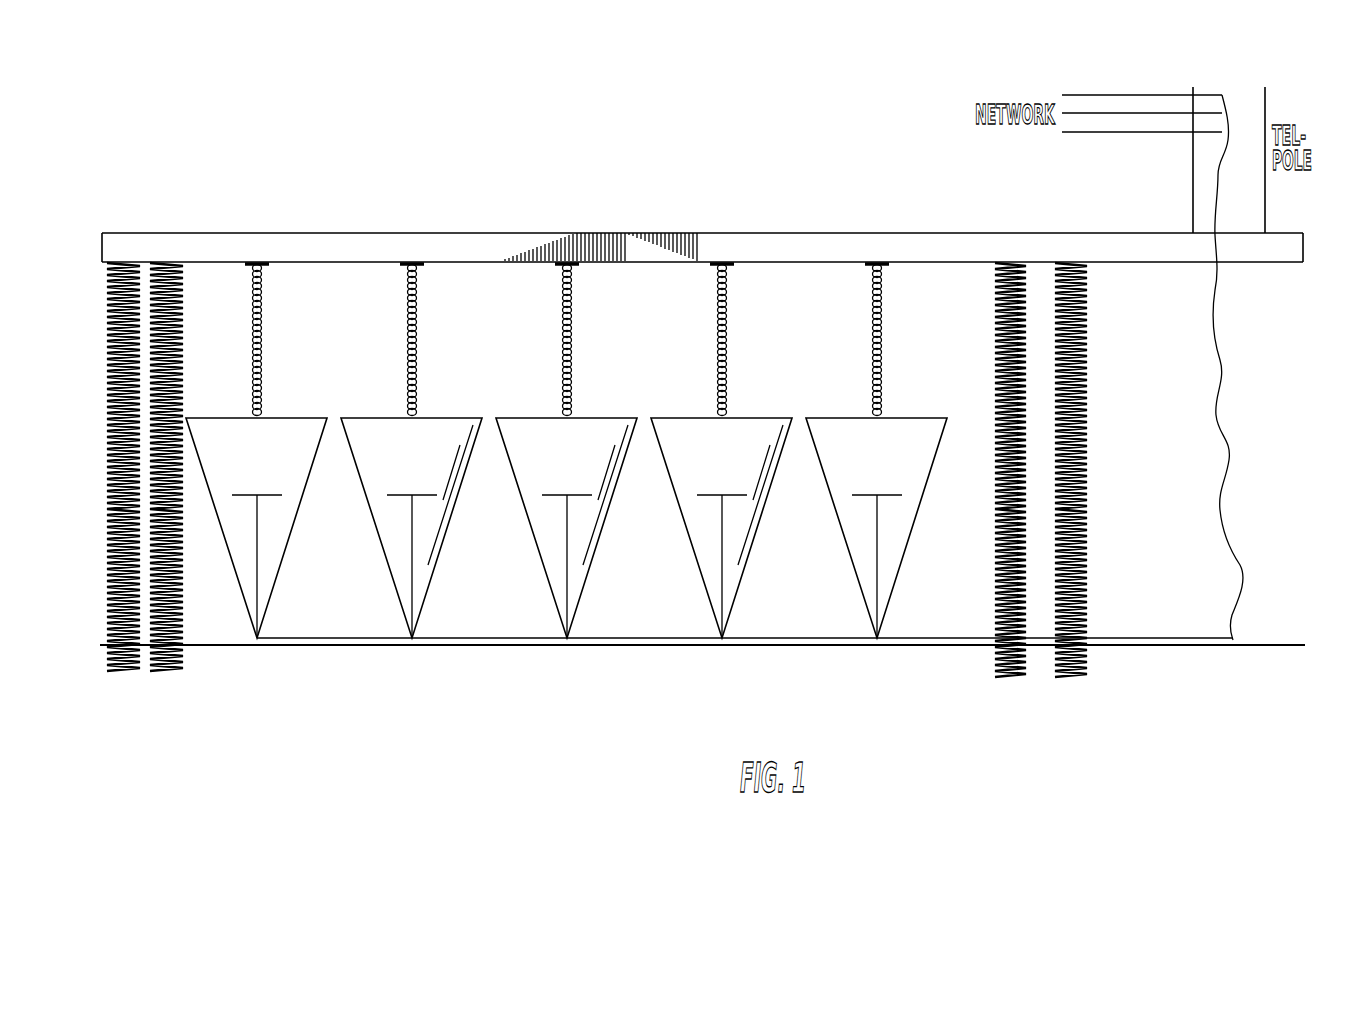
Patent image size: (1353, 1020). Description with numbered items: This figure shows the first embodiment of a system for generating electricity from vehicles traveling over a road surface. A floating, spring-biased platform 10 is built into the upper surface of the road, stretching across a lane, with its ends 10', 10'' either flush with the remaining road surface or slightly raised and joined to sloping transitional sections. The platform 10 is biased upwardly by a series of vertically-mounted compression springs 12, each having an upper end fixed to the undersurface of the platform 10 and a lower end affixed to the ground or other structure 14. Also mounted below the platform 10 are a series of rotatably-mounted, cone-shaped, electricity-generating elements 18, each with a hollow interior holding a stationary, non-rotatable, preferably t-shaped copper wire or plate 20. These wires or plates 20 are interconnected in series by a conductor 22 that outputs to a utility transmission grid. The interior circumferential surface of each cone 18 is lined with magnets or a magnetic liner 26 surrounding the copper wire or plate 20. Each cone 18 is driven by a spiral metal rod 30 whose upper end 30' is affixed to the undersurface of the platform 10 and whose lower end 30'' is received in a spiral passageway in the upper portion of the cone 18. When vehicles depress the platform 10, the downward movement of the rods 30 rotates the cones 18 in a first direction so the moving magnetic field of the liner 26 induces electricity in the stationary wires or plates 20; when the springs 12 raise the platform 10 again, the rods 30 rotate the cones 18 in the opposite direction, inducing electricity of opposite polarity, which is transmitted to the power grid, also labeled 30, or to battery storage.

The platform 10 is at (702, 223).
The platform end 10' is at (99, 223).
The platform end 10'' is at (1300, 274).
The compression spring 12 is at (182, 356).
The ground or other structure 14 is at (702, 647).
The cone-shaped electricity-generating element 18 is at (308, 496).
The copper wire or plate 20 is at (257, 523).
The conductor 22 is at (963, 641).
The magnetic liner 26 is at (931, 470).
The spiral metal rod 30 is at (719, 251).
The upper end of spiral metal rod 30' is at (599, 273).
The lower end of spiral metal rod 30'' is at (599, 340).